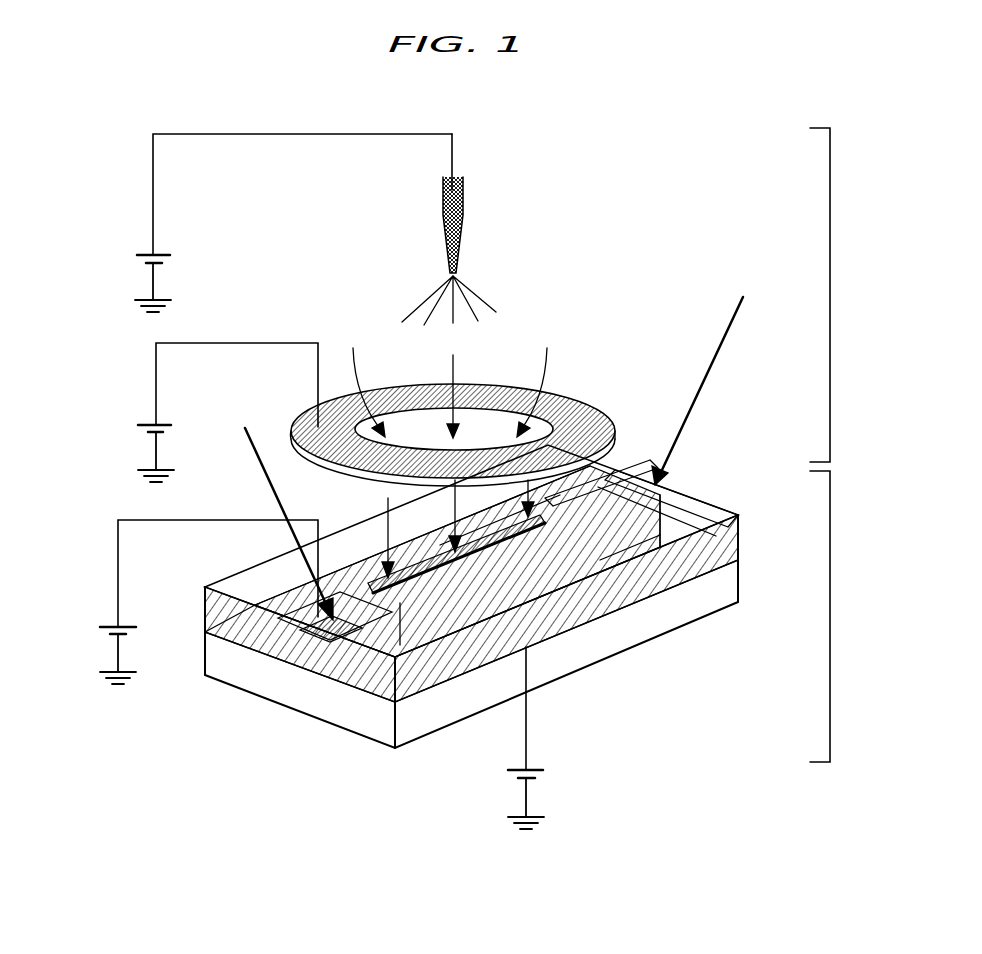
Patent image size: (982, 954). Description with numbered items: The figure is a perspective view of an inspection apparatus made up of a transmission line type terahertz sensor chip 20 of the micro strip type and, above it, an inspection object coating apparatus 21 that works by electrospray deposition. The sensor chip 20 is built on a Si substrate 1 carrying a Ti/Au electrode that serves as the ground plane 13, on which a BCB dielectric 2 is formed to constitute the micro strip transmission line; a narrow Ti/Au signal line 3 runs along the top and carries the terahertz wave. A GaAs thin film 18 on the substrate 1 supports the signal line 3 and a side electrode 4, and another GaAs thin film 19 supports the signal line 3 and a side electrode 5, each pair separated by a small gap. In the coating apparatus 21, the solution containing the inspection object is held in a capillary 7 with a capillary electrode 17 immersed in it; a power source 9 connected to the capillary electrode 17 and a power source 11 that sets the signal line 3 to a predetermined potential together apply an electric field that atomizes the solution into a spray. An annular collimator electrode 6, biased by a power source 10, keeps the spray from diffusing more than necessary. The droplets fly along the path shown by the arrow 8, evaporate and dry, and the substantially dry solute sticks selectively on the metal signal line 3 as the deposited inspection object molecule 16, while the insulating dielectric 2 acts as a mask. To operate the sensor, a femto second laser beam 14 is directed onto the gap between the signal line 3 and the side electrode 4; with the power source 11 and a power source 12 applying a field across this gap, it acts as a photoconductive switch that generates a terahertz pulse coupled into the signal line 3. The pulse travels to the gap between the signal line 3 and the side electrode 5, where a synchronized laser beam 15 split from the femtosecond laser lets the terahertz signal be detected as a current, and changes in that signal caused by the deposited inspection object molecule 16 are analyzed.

The substrate 1 is at (700, 610).
The dielectric 2 is at (730, 540).
The signal line 3 is at (628, 480).
The side electrode 4 is at (383, 638).
The side electrode 5 is at (700, 507).
The annular collimator electrode 6 is at (598, 412).
The capillary 7 is at (458, 245).
The arrow 8 is at (480, 358).
The power source 9 is at (140, 280).
The power source 10 is at (145, 440).
The power source 11 is at (110, 648).
The power source 12 is at (535, 790).
The ground plane 13 is at (272, 642).
The femto second laser beam 14 is at (250, 430).
The laser beam 15 is at (713, 358).
The inspection object molecule 16 is at (517, 550).
The capillary electrode 17 is at (456, 153).
The GaAs thin film 18 is at (318, 630).
The GaAs thin film 19 is at (607, 510).
The transmission line type terahertz sensor chip 20 is at (837, 616).
The inspection object coating apparatus 21 is at (837, 295).